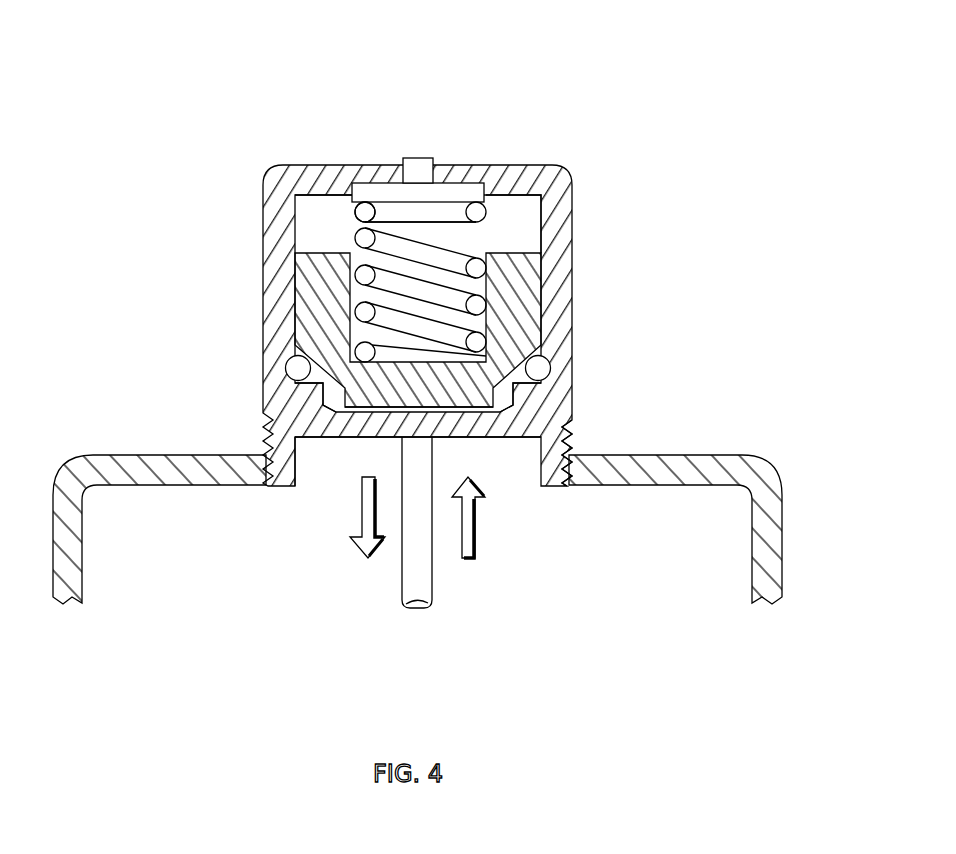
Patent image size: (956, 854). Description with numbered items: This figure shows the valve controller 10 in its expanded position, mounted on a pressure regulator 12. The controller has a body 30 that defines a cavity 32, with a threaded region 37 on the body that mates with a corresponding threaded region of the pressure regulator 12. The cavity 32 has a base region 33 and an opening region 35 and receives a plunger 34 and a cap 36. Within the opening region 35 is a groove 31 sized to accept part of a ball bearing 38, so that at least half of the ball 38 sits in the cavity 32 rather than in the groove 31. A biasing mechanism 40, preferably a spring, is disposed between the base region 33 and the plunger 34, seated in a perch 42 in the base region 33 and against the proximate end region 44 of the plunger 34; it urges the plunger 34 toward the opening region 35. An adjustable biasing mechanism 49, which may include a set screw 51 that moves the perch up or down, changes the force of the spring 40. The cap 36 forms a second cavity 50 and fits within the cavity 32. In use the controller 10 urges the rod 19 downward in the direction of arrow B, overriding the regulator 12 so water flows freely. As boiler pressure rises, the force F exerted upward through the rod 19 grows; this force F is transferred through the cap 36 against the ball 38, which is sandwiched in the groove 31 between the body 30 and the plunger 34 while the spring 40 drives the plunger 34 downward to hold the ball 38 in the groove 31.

The valve controller 10 is at (651, 85).
The pressure regulator 12 is at (782, 530).
The rod 19 is at (433, 588).
The body 30 is at (572, 302).
The groove 31 is at (293, 370).
The cavity 32 is at (532, 223).
The base region 33 is at (334, 198).
The plunger 34 is at (327, 297).
The opening region 35 is at (329, 469).
The cap 36 is at (498, 433).
The threaded region 37 is at (567, 445).
The ball bearing 38 is at (297, 367).
The biasing mechanism 40 is at (360, 216).
The perch 42 is at (453, 210).
The proximate end region 44 is at (483, 252).
The adjustable biasing mechanism 49 is at (383, 190).
The second cavity 50 is at (502, 402).
The set screw 51 is at (420, 162).
The arrow B is at (362, 522).
The force F is at (475, 529).